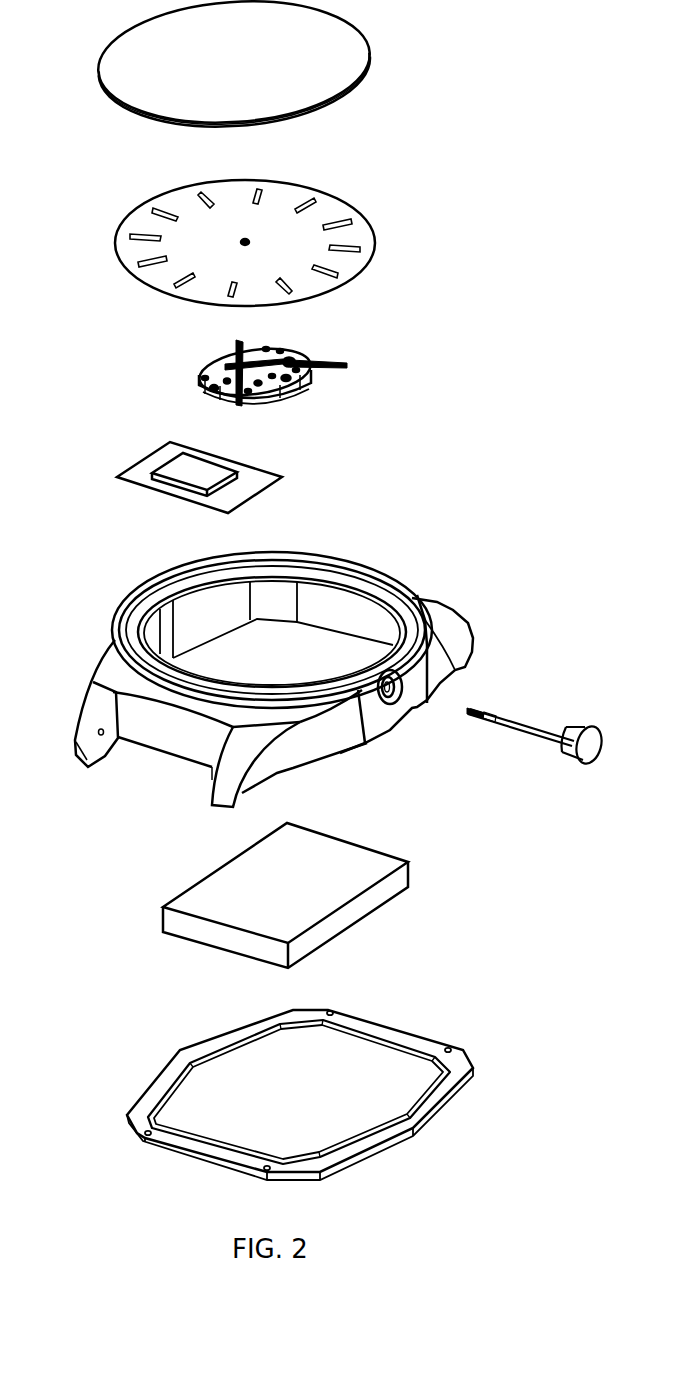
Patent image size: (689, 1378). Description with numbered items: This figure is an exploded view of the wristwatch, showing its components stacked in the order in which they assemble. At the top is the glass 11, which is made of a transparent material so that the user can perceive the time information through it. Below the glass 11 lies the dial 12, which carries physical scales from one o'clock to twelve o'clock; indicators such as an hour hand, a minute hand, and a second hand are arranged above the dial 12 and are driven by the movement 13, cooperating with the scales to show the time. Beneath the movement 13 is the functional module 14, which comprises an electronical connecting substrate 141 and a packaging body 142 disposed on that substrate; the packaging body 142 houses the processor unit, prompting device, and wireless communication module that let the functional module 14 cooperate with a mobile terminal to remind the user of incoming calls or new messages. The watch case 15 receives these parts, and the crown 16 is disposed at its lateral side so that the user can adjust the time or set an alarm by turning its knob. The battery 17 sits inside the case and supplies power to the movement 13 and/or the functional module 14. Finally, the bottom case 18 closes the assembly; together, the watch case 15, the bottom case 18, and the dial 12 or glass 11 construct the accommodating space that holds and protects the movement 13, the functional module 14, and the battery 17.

The glass 11 is at (332, 52).
The dial 12 is at (332, 205).
The movement 13 is at (300, 348).
The functional module 14 is at (156, 433).
The electronical connecting substrate 141 is at (142, 467).
The packaging body 142 is at (220, 468).
The watch case 15 is at (368, 573).
The crown 16 is at (523, 720).
The battery 17 is at (217, 895).
The bottom case 18 is at (170, 1067).